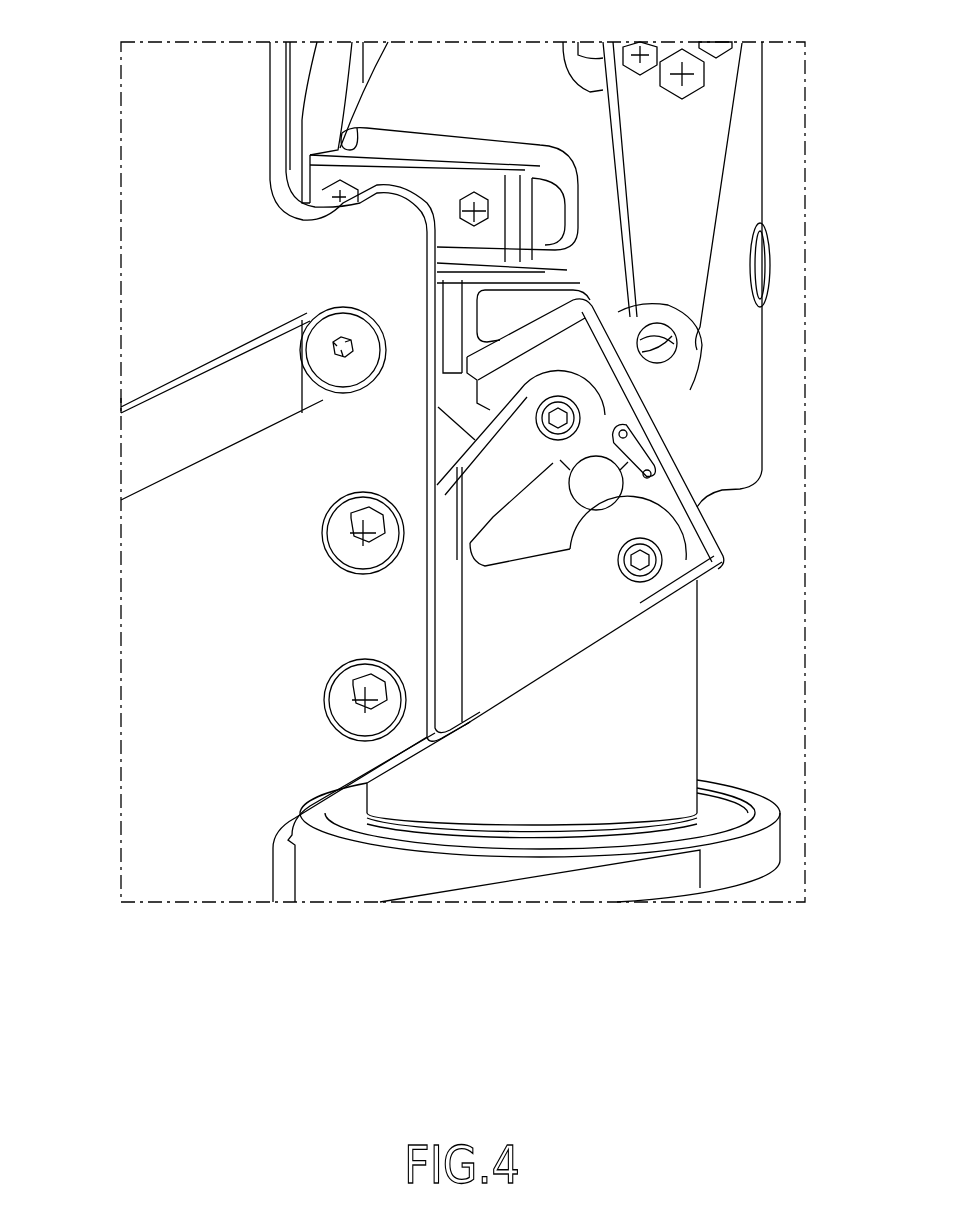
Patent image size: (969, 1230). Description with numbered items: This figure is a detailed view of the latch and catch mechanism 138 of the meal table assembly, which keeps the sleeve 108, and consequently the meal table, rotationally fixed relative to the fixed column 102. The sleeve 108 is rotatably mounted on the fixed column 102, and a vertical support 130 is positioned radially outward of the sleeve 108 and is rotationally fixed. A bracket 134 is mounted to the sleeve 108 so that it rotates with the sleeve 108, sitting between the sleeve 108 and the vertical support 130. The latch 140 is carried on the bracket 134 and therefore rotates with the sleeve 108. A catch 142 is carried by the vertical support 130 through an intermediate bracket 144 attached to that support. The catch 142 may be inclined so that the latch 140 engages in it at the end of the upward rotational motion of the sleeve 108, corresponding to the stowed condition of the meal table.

The fixed column 102 is at (678, 695).
The sleeve 108 is at (742, 320).
The vertical support 130 is at (152, 636).
The bracket 134 is at (470, 303).
The latch and catch mechanism 138 is at (665, 432).
The latch 140 is at (597, 488).
The catch 142 is at (680, 533).
The intermediate bracket 144 is at (676, 562).